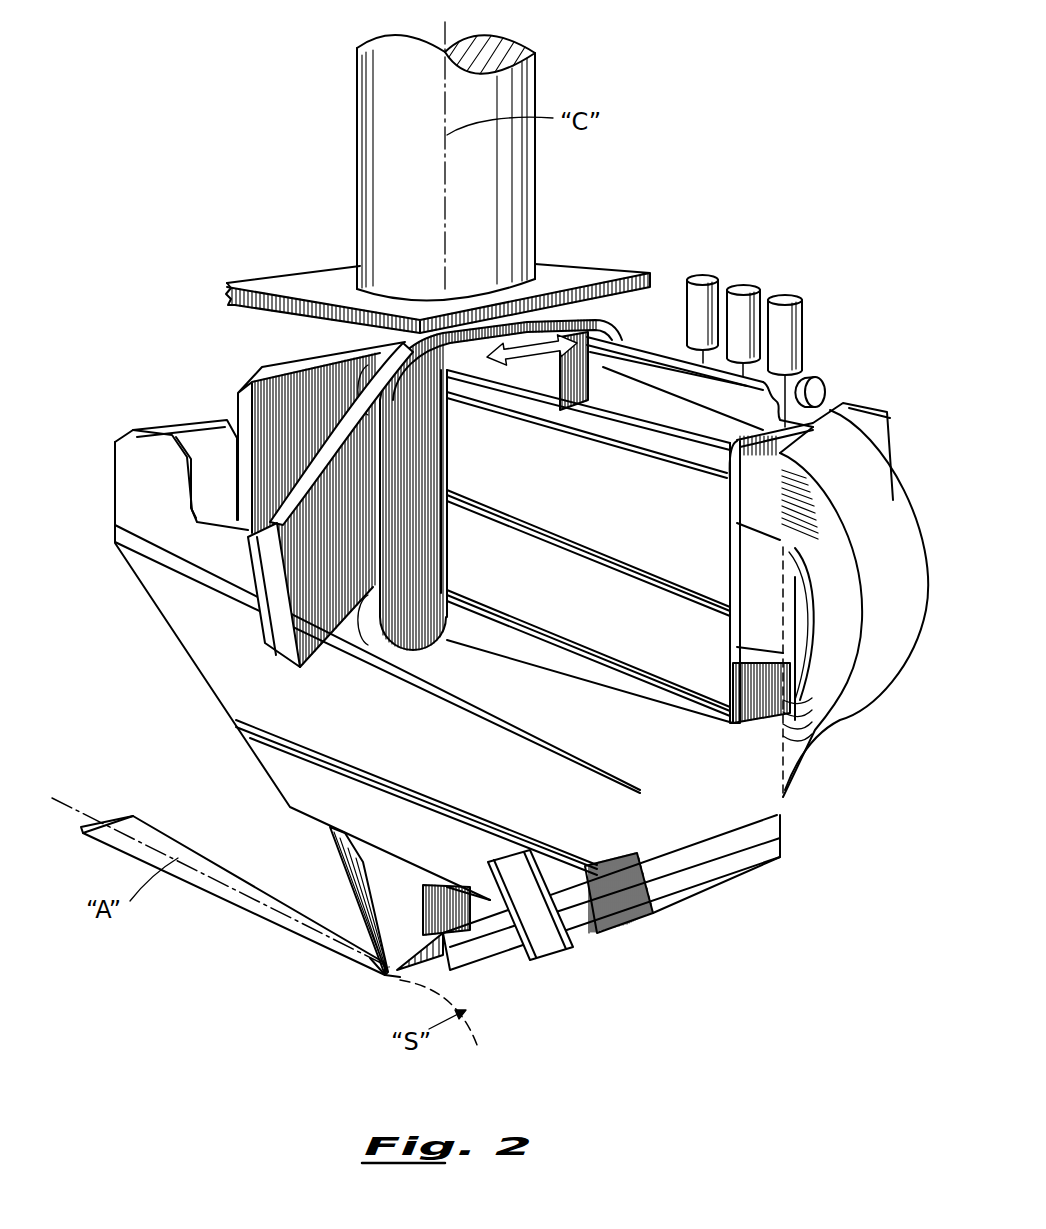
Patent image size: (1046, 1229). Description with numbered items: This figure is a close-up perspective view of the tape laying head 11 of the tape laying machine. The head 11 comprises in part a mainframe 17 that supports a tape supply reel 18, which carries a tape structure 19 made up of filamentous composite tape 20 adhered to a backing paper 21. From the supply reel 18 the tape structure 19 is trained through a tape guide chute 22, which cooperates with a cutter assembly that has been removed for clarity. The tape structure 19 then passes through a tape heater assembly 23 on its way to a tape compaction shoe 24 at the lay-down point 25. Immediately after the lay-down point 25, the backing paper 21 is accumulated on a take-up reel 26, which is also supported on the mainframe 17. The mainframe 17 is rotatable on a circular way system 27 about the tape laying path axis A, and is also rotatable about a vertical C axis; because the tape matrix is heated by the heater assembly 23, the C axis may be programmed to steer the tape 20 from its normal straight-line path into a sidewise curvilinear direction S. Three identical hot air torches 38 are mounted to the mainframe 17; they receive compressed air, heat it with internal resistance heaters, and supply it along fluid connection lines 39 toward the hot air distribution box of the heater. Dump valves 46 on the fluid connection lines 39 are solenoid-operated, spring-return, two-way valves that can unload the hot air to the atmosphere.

The tape laying head 11 is at (147, 613).
The mainframe 17 is at (352, 722).
The tape supply reel 18 is at (810, 648).
The tape structure 19 is at (845, 755).
The filamentous composite tape 20 is at (257, 916).
The backing paper 21 is at (346, 866).
The tape guide chute 22 is at (680, 834).
The tape heater assembly 23 is at (496, 974).
The tape compaction shoe 24 is at (412, 914).
The lay-down point 25 is at (381, 979).
The take-up reel 26 is at (227, 410).
The circular way system 27 is at (257, 514).
The hot air torches 38 is at (804, 323).
The fluid connection lines 39 is at (700, 883).
The dump valves 46 is at (821, 380).